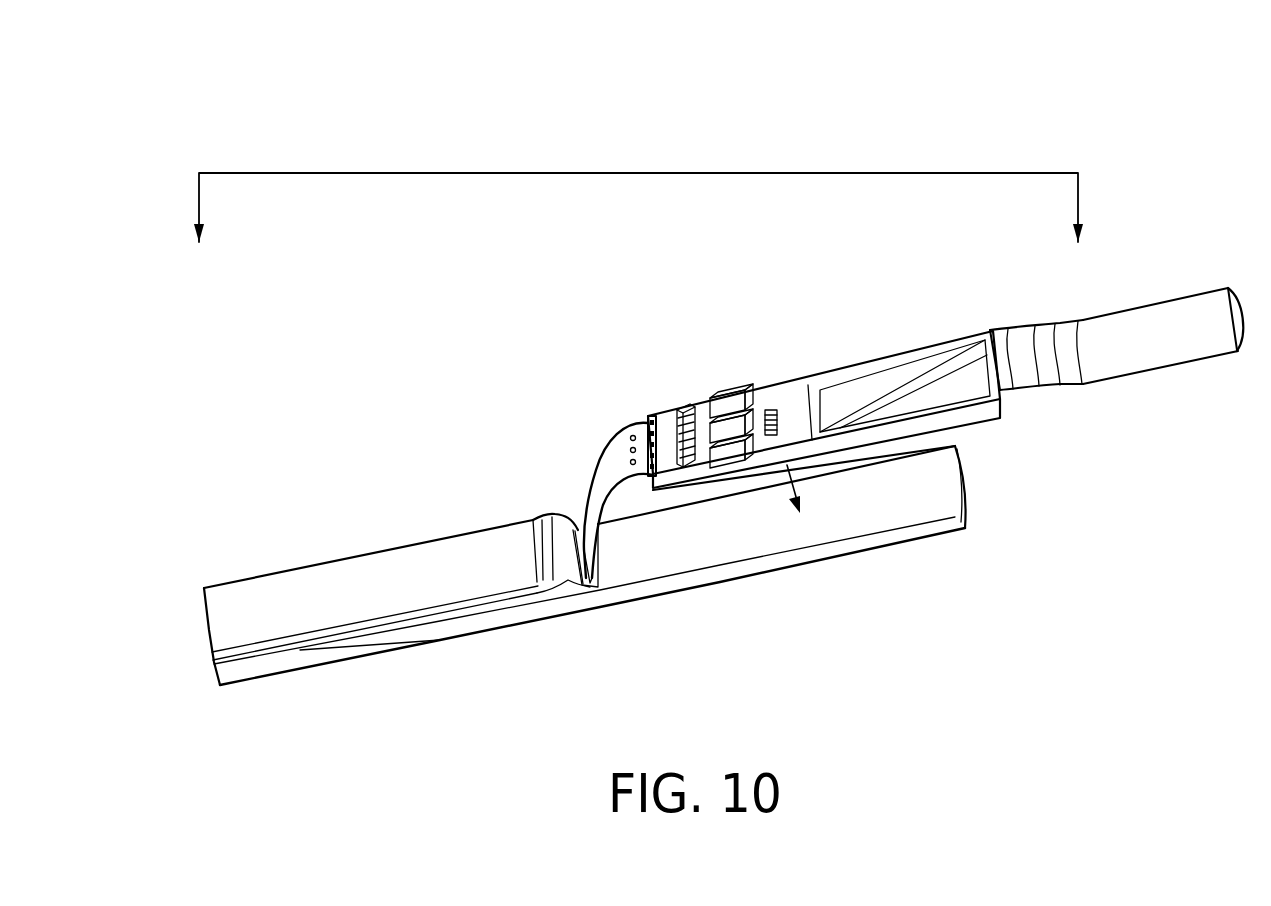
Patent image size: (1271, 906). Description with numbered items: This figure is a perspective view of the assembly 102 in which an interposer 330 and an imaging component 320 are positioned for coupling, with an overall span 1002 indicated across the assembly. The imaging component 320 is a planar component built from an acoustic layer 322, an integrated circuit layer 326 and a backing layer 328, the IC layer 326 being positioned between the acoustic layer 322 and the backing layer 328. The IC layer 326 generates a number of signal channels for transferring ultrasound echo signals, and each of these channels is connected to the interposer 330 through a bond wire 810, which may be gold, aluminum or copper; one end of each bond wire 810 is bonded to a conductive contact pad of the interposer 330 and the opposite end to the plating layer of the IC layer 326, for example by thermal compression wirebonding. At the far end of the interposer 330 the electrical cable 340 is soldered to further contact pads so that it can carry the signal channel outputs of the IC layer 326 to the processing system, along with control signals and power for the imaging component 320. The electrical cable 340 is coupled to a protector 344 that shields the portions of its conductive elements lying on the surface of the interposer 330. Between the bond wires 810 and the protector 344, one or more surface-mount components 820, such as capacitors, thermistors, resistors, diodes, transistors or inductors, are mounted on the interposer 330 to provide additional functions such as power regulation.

The interventional device 102 is at (302, 76).
The length of assembly 1002 is at (638, 193).
The imaging component 320 is at (356, 535).
The acoustic layer 322 is at (270, 583).
The integrated circuit (IC) layer 326 is at (290, 652).
The backing layer 328 is at (400, 642).
The bond wire 810 is at (608, 468).
The interposer 330 is at (814, 340).
The surface-mount component 820 is at (683, 405).
The protector 344 is at (923, 345).
The electrical cable 340 is at (1160, 303).